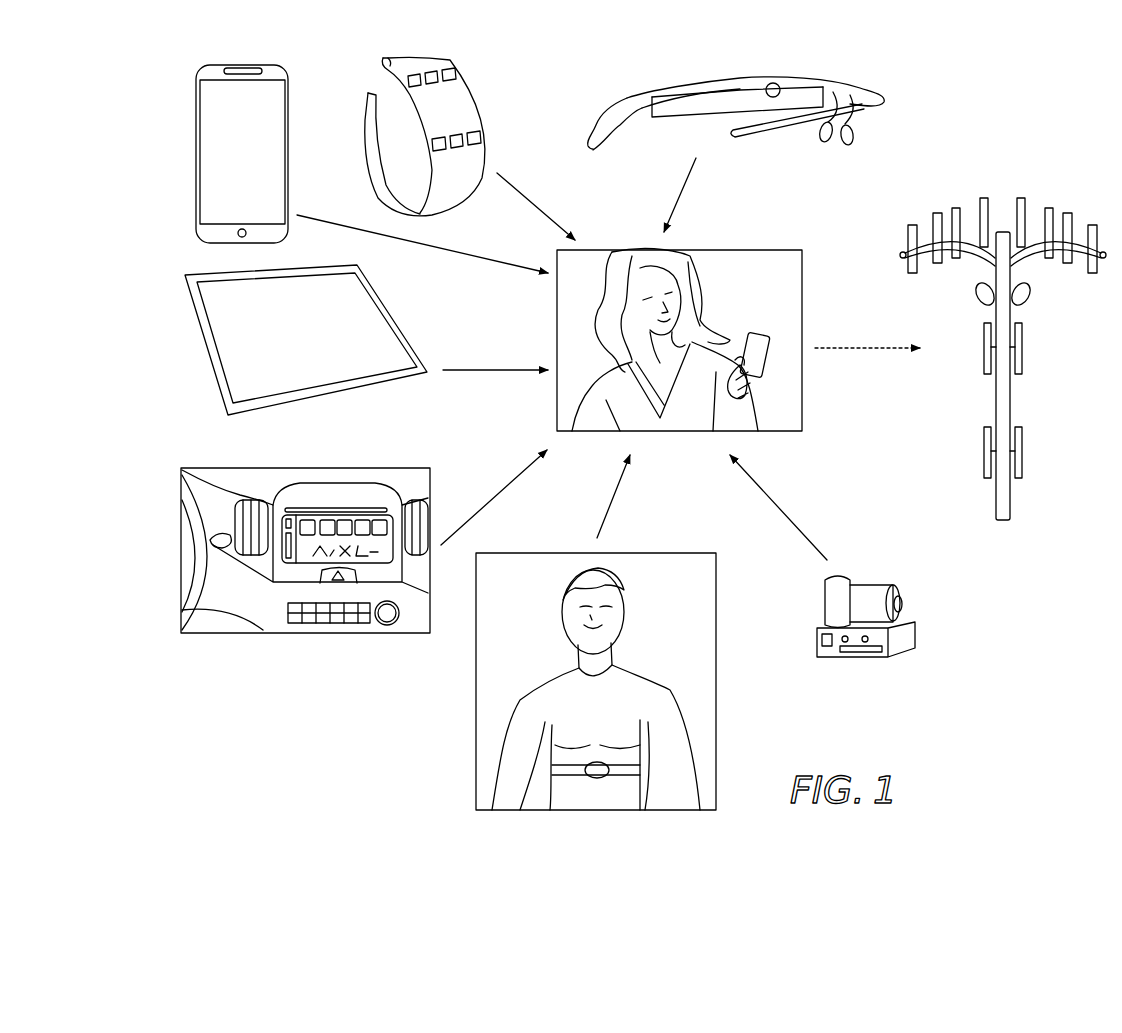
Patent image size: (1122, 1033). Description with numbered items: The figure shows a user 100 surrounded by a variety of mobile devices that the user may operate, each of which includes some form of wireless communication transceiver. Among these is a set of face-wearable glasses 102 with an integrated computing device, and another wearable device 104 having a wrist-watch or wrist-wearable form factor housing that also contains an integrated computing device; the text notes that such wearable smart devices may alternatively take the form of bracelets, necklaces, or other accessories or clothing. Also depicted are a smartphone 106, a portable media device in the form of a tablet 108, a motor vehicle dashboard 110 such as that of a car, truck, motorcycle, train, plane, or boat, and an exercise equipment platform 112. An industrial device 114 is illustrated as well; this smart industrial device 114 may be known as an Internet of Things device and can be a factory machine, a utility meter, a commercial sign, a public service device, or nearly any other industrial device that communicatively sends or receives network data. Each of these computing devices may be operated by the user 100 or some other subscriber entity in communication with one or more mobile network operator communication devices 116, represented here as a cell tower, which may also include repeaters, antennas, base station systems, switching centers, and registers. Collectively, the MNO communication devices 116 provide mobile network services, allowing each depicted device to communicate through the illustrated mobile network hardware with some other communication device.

The user 100 is at (770, 294).
The face-wearable glasses 102 is at (847, 82).
The wearable device 104 is at (480, 106).
The smartphone 106 is at (197, 152).
The tablet 108 is at (397, 322).
The motor vehicle dashboard 110 is at (305, 467).
The exercise equipment platform 112 is at (635, 553).
The industrial device 114 is at (875, 578).
The mobile network operator communication devices 116 is at (1023, 196).